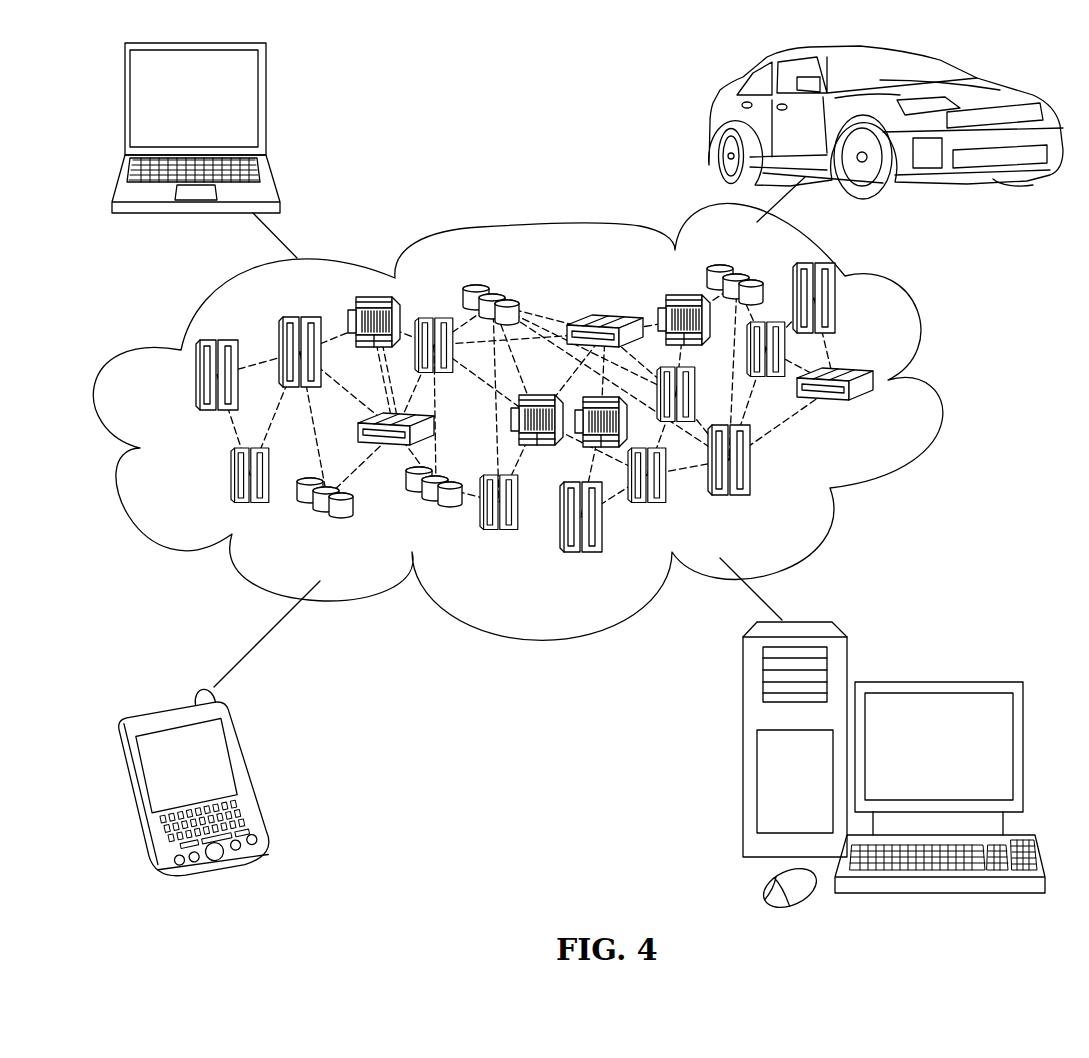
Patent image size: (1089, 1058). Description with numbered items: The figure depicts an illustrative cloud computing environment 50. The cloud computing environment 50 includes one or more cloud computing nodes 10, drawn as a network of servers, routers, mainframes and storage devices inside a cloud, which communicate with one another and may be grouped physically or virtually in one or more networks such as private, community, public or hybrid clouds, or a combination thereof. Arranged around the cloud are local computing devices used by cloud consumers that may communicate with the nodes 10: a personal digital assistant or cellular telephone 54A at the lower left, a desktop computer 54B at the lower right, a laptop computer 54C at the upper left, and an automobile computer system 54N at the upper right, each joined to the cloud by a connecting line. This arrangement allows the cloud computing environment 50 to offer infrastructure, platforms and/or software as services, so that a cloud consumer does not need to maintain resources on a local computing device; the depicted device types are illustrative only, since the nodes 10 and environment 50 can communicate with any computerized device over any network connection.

The cloud computing environment 50 is at (935, 386).
The cloud computing nodes 10 is at (878, 417).
The personal digital assistant (PDA) or cellular telephone 54A is at (257, 776).
The desktop computer 54B is at (937, 681).
The laptop computer 54C is at (265, 107).
The automobile computer system 54N is at (710, 123).